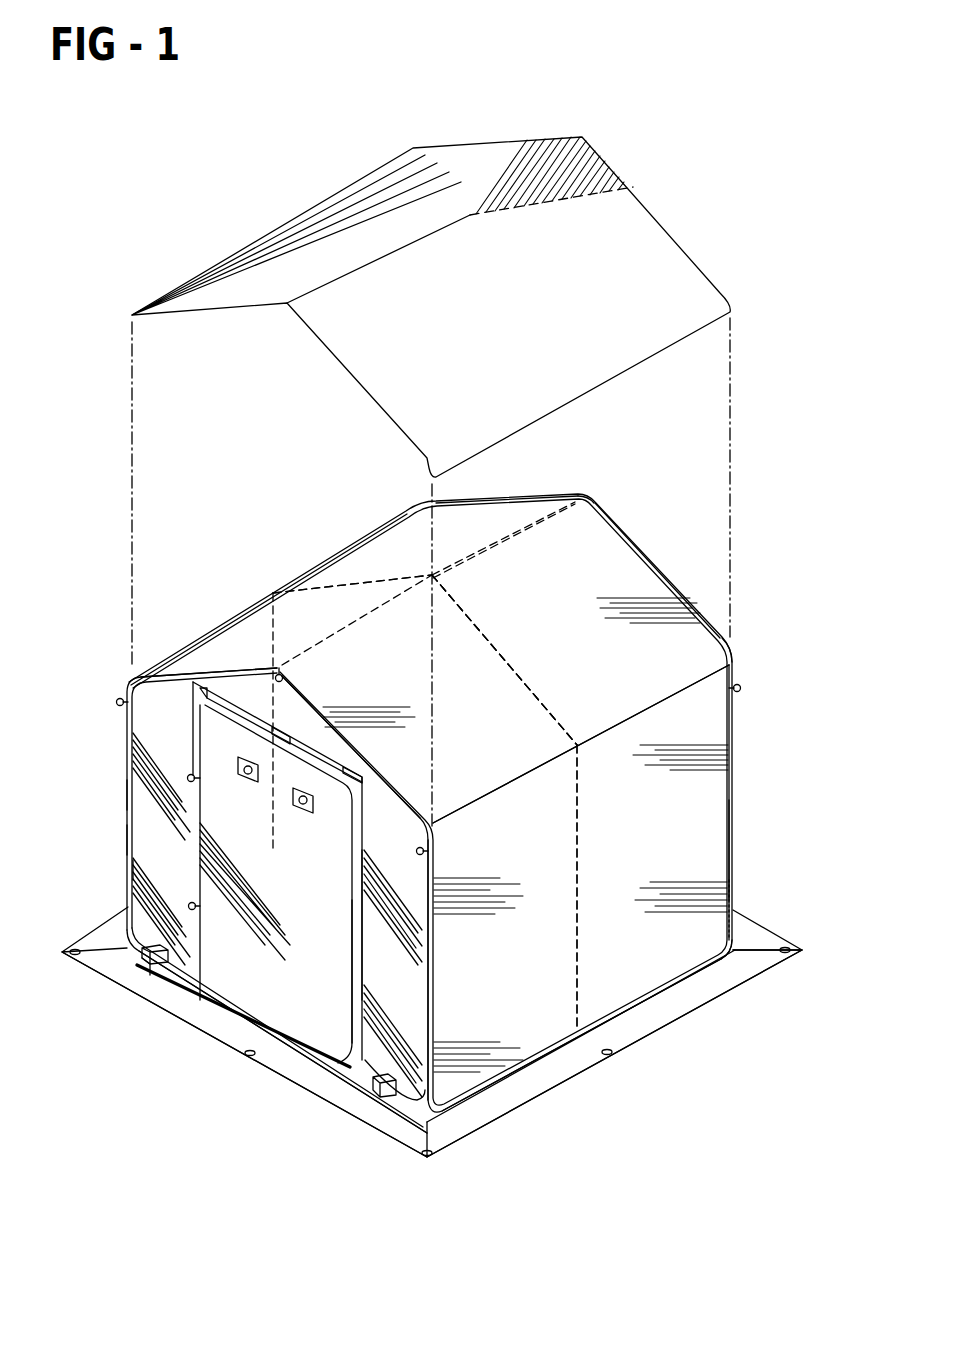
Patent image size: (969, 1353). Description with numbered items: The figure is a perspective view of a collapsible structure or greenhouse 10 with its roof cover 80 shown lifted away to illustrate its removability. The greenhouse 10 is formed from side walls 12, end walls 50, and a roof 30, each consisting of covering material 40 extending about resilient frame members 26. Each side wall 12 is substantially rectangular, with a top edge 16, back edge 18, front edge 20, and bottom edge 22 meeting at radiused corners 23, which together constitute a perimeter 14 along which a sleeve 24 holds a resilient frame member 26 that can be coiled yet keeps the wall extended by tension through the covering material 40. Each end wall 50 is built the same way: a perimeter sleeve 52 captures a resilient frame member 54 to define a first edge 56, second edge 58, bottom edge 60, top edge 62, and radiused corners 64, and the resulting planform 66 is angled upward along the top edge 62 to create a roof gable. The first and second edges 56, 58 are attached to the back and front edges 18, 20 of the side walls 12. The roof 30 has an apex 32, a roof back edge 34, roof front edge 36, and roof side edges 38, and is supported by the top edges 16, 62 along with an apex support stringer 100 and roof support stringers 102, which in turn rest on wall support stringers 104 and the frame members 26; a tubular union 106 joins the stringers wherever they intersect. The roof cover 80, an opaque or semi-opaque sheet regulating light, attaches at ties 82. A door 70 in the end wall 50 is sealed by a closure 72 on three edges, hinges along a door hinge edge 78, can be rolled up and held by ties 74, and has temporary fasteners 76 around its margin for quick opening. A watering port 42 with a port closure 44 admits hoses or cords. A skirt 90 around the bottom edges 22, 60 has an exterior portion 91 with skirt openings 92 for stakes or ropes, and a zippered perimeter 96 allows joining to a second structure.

The collapsible structure or greenhouse 10 is at (830, 292).
The side wall 12 is at (272, 580).
The perimeter 14 is at (730, 655).
The top edge 16 is at (662, 704).
The back edge 18 is at (733, 760).
The front edge 20 is at (433, 993).
The bottom edge 22 is at (690, 980).
The radiused corner 23 is at (730, 945).
The sleeve 24 is at (733, 838).
The resilient frame member 26 is at (733, 900).
The roof 30 is at (527, 599).
The apex 32 is at (510, 537).
The roof back edge 34 is at (602, 513).
The roof front edge 36 is at (302, 690).
The roof side edge 38 is at (347, 548).
The covering material 40 is at (460, 1073).
The watering port 42 is at (143, 970).
The port closure 44 is at (140, 960).
The end wall 50 is at (145, 843).
The perimeter sleeve 52 is at (128, 840).
The resilient frame member 54 is at (128, 868).
The first edge 56 is at (127, 795).
The second edge 58 is at (420, 967).
The bottom edge 60 is at (342, 1078).
The top edge 62 is at (202, 672).
The radiused corner 64 is at (410, 1097).
The planform 66 is at (392, 881).
The door 70 is at (290, 856).
The closure 72 is at (355, 970).
The tie 74 is at (187, 778).
The temporary fastener 76 is at (210, 705).
The door hinge edge 78 is at (203, 893).
The roof cover 80 is at (510, 311).
The tie 82 is at (115, 700).
The skirt 90 is at (520, 1090).
The exterior portion 91 is at (737, 972).
The skirt opening 92 is at (623, 1048).
The zippered perimeter 96 is at (683, 597).
The apex support stringer 100 is at (443, 567).
The roof support stringer 102 is at (327, 588).
The wall support stringer 104 is at (575, 858).
The union 106 is at (445, 575).